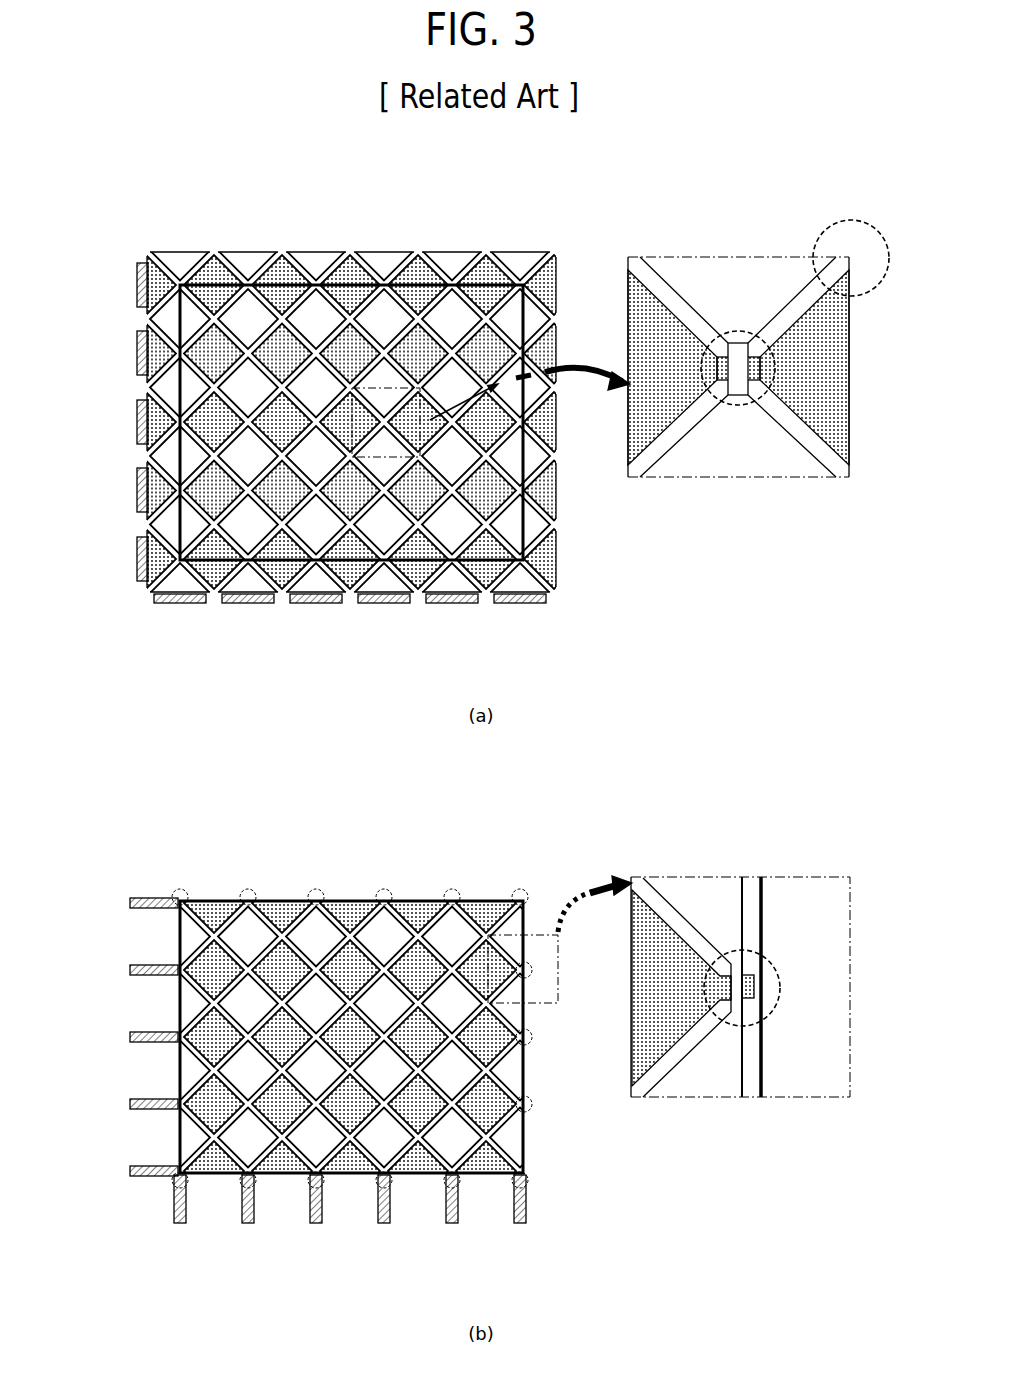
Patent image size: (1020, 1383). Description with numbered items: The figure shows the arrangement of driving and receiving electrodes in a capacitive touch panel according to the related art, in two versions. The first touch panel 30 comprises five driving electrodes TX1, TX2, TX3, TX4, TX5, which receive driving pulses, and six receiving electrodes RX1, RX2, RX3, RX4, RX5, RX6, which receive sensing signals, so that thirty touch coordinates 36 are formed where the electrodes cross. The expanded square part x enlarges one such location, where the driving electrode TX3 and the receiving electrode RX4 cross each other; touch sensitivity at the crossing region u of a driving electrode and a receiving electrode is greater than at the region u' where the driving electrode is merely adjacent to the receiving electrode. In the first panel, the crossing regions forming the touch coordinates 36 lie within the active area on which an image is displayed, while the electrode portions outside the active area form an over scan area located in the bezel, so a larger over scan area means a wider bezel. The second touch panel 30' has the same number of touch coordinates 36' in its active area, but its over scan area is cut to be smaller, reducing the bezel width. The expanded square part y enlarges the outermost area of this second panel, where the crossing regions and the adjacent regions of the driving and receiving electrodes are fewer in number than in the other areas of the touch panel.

The touch panel 30 is at (485, 729).
The touch coordinates 36 is at (342, 285).
The expanded square part x is at (420, 373).
The driving electrode TX1 is at (137, 285).
The driving electrode TX2 is at (137, 353).
The driving electrode TX3 is at (137, 422).
The driving electrode TX4 is at (137, 490).
The driving electrode TX5 is at (137, 559).
The receiving electrode RX1 is at (180, 603).
The receiving electrode RX2 is at (248, 603).
The receiving electrode RX3 is at (316, 603).
The receiving electrode RX4 is at (384, 603).
The receiving electrode RX5 is at (452, 603).
The receiving electrode RX6 is at (520, 603).
The crossing region u is at (757, 677).
The adjacent region u' is at (851, 237).
The touch panel 30' is at (507, 799).
The touch coordinates 36' is at (348, 899).
The expanded square part y is at (808, 877).